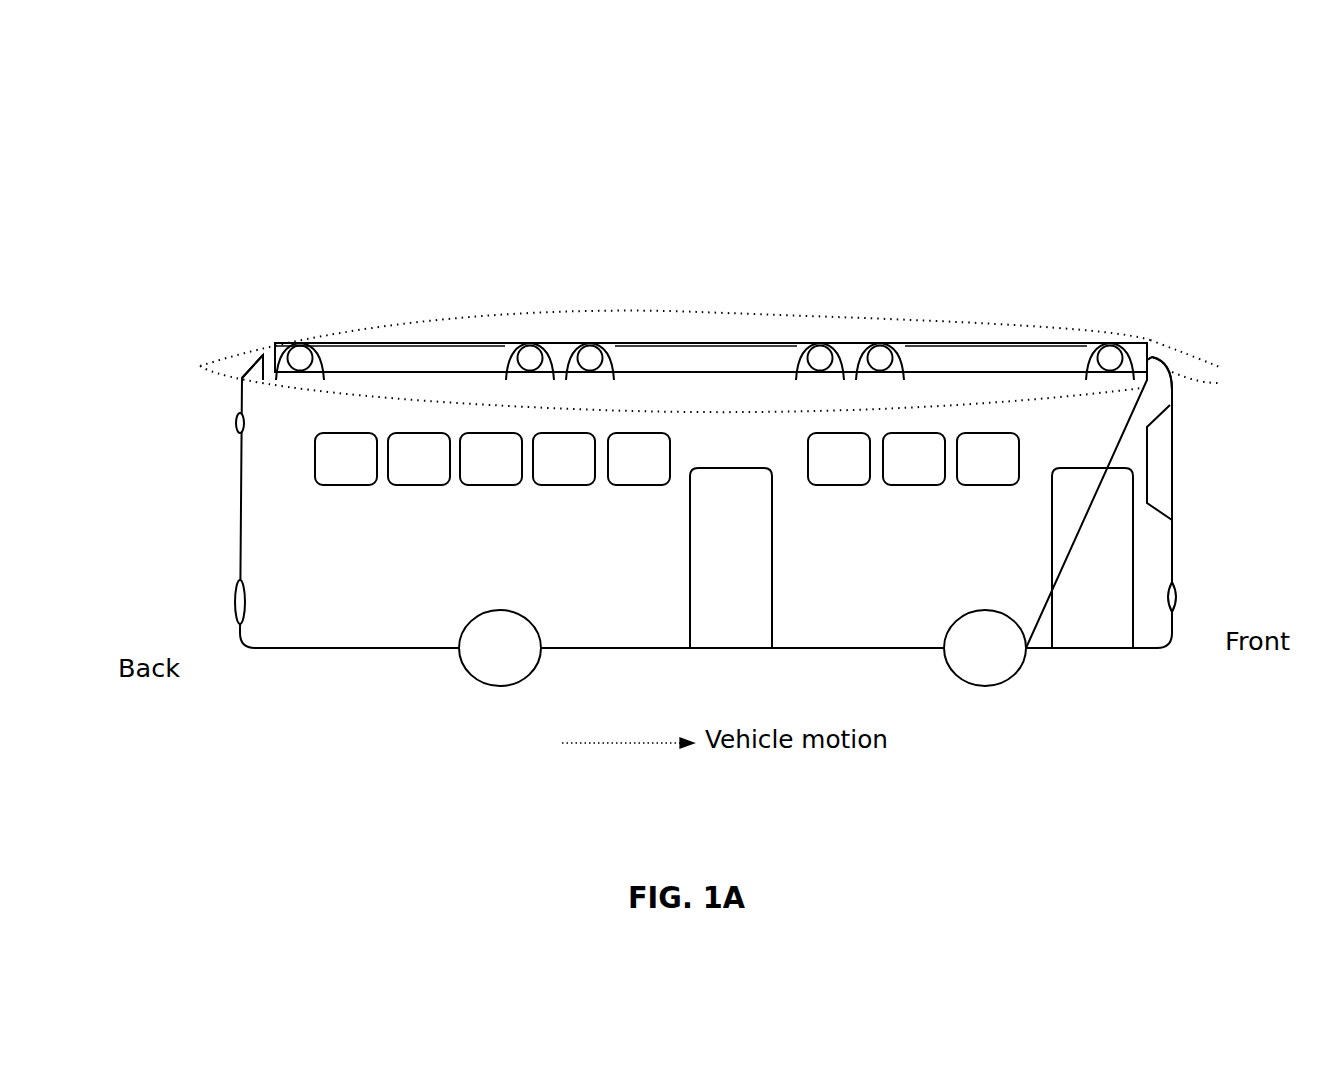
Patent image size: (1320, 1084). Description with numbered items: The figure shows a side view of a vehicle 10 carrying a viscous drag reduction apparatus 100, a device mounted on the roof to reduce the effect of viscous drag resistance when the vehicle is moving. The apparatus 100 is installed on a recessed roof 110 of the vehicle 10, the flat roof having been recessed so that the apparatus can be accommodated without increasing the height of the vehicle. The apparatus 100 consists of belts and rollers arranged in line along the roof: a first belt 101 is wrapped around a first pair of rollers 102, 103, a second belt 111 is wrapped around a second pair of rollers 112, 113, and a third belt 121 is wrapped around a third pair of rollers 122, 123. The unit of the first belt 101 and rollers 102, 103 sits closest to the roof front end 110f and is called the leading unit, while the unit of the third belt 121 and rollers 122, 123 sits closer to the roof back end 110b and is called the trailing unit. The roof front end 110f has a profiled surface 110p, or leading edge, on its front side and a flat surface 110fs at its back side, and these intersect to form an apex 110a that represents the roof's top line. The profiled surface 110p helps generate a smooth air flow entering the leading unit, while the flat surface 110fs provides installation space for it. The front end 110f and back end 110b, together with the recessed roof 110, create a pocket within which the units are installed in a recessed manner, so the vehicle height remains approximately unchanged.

The vehicle 10 is at (1178, 128).
The viscous drag reduction apparatus 100 is at (1173, 346).
The first belt 101 is at (995, 343).
The first roller 102 is at (1090, 343).
The first roller 103 is at (890, 343).
The recessed roof 110 is at (1025, 381).
The apex 110a is at (1143, 346).
The roof back end 110b is at (250, 364).
The roof front end 110f is at (1162, 358).
The flat surface 110fs is at (1143, 372).
The profiled surface 110p is at (1215, 367).
The second belt 111 is at (710, 343).
The second roller 112 is at (805, 343).
The second roller 113 is at (603, 343).
The third belt 121 is at (418, 343).
The third roller 122 is at (510, 343).
The third roller 123 is at (313, 343).